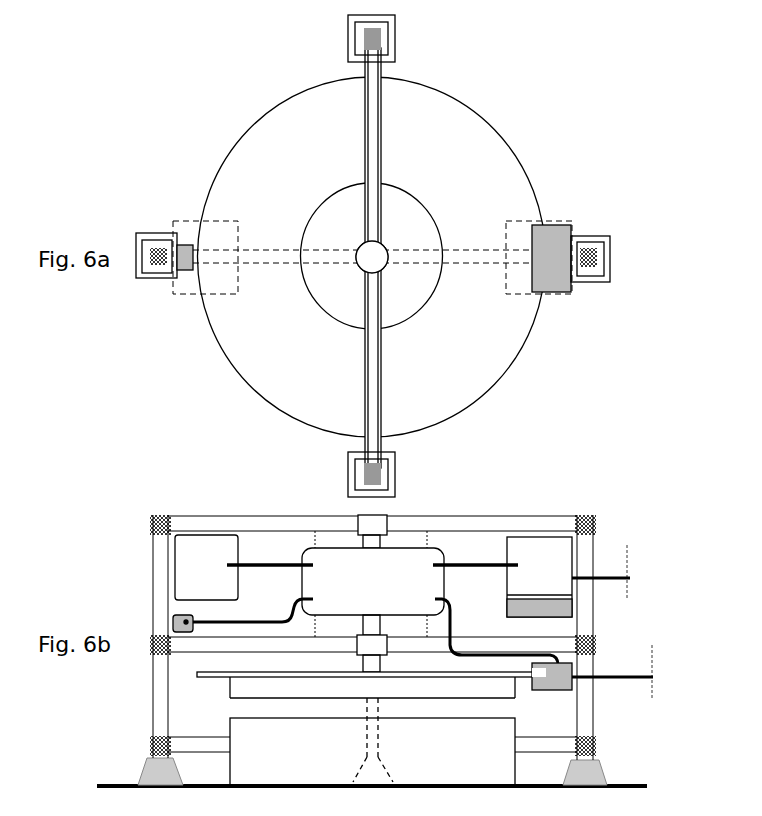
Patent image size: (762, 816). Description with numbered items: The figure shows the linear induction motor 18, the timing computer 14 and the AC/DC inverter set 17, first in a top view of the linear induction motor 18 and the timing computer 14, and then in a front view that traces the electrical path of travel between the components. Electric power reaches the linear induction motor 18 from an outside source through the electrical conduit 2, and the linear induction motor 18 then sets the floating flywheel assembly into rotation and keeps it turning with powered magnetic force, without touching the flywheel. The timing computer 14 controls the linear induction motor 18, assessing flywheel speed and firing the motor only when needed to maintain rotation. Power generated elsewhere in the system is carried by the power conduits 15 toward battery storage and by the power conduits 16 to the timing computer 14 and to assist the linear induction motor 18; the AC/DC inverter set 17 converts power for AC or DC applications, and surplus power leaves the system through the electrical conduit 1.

In FIG. 6b, the electrical conduit 1 is at (634, 578).
In FIG. 6b, the electrical conduit 2 is at (661, 677).
In FIG. 6a, the timing computer 14 is at (189, 240).
In FIG. 6b, the timing computer 14 is at (174, 610).
In FIG. 6b, the power conduits 15 is at (286, 558).
In FIG. 6b, the power conduits 16 is at (277, 613).
In FIG. 6b, the AC/DC inverter set 17 is at (551, 606).
In FIG. 6a, the linear induction motor 18 is at (556, 221).
In FIG. 6b, the linear induction motor 18 is at (562, 694).